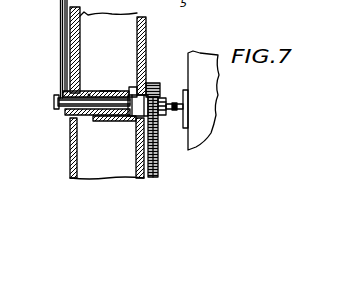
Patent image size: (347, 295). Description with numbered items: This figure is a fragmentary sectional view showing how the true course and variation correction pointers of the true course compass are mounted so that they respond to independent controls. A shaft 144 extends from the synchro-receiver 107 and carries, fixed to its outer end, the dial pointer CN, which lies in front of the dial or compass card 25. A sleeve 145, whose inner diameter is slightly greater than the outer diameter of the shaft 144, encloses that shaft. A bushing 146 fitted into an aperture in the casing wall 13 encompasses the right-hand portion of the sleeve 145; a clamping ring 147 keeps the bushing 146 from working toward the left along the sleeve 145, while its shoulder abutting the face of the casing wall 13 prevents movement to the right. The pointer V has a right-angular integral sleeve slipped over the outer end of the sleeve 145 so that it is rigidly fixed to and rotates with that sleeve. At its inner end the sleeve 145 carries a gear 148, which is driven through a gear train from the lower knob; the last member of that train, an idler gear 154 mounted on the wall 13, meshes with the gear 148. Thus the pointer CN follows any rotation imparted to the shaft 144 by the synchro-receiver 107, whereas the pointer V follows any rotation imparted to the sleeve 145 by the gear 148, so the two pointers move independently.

The dial pointer V is at (62, 51).
The dial pointer CN is at (64, 72).
The dial or compass card 25 is at (79, 33).
The casing wall 13 is at (146, 37).
The shaft 144 is at (63, 117).
The sleeve 145 is at (112, 117).
The bushing 146 is at (109, 91).
The clamping ring 147 is at (77, 123).
The gear 148 is at (154, 84).
The idler gear 154 is at (157, 157).
The synchro-receiver casting 107 is at (206, 122).